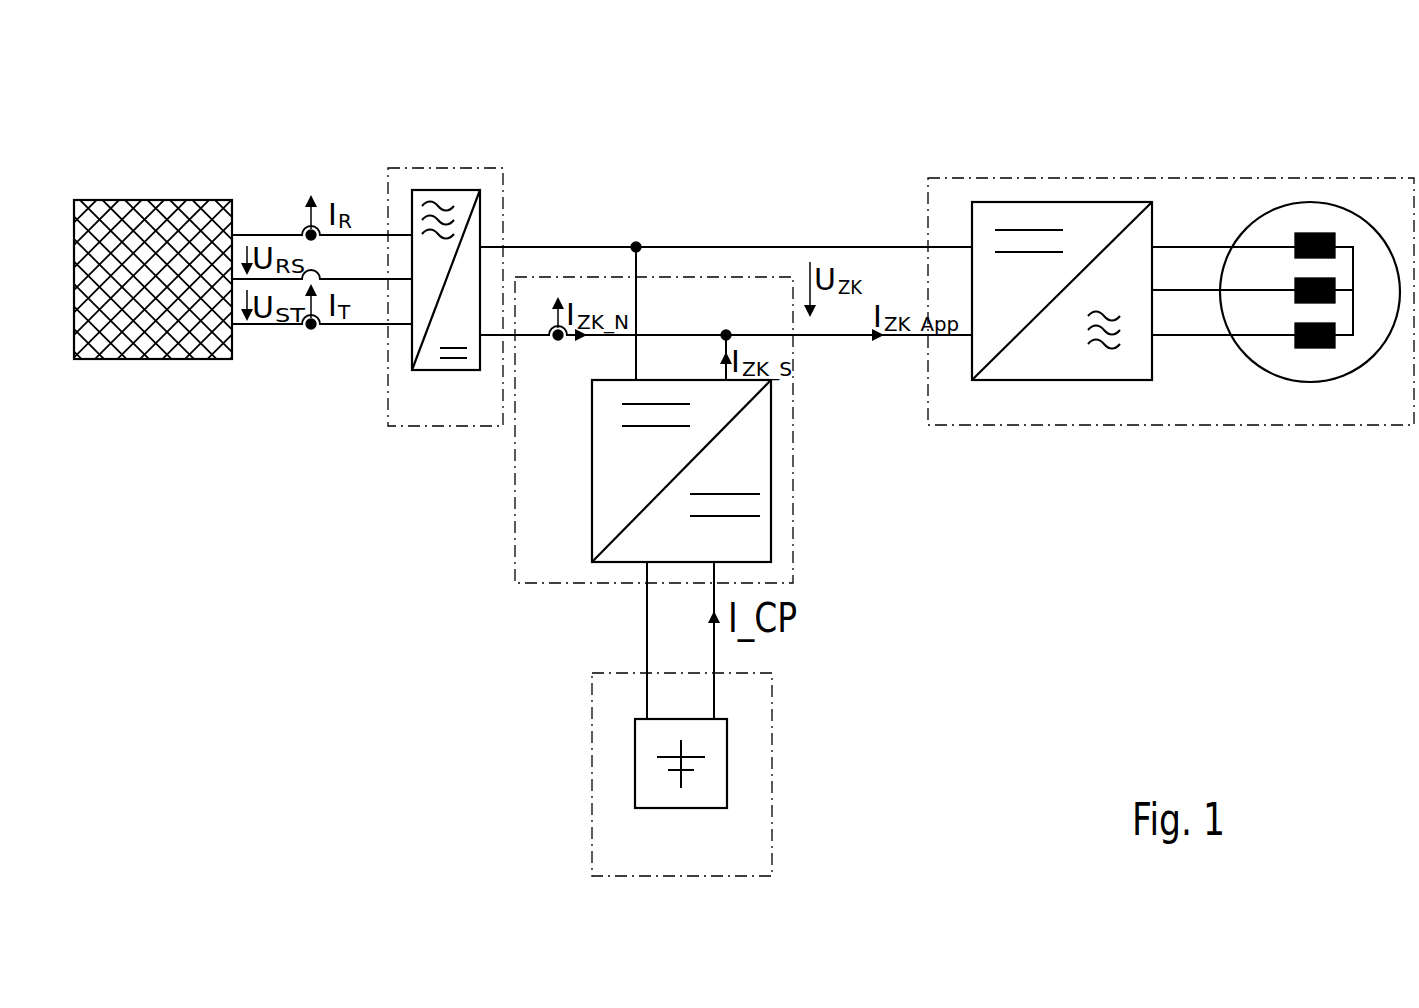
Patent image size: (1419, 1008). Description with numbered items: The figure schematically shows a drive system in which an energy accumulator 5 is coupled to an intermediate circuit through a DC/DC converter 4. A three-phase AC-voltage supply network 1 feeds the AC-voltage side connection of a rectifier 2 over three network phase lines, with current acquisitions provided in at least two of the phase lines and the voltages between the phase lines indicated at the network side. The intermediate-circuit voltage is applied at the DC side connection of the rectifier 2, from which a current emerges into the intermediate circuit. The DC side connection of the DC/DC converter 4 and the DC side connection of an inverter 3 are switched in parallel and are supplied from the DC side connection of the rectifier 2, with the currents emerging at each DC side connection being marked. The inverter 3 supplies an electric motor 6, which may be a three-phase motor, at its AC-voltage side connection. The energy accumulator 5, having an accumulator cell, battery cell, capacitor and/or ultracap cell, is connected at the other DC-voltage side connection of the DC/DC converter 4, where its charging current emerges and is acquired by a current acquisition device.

The AC-voltage supply network 1 is at (165, 358).
The rectifier 2 is at (486, 181).
The inverter 3 is at (1093, 219).
The DC/DC converter 4 is at (754, 445).
The energy accumulator 5 is at (753, 778).
The electric motor 6 is at (1312, 220).